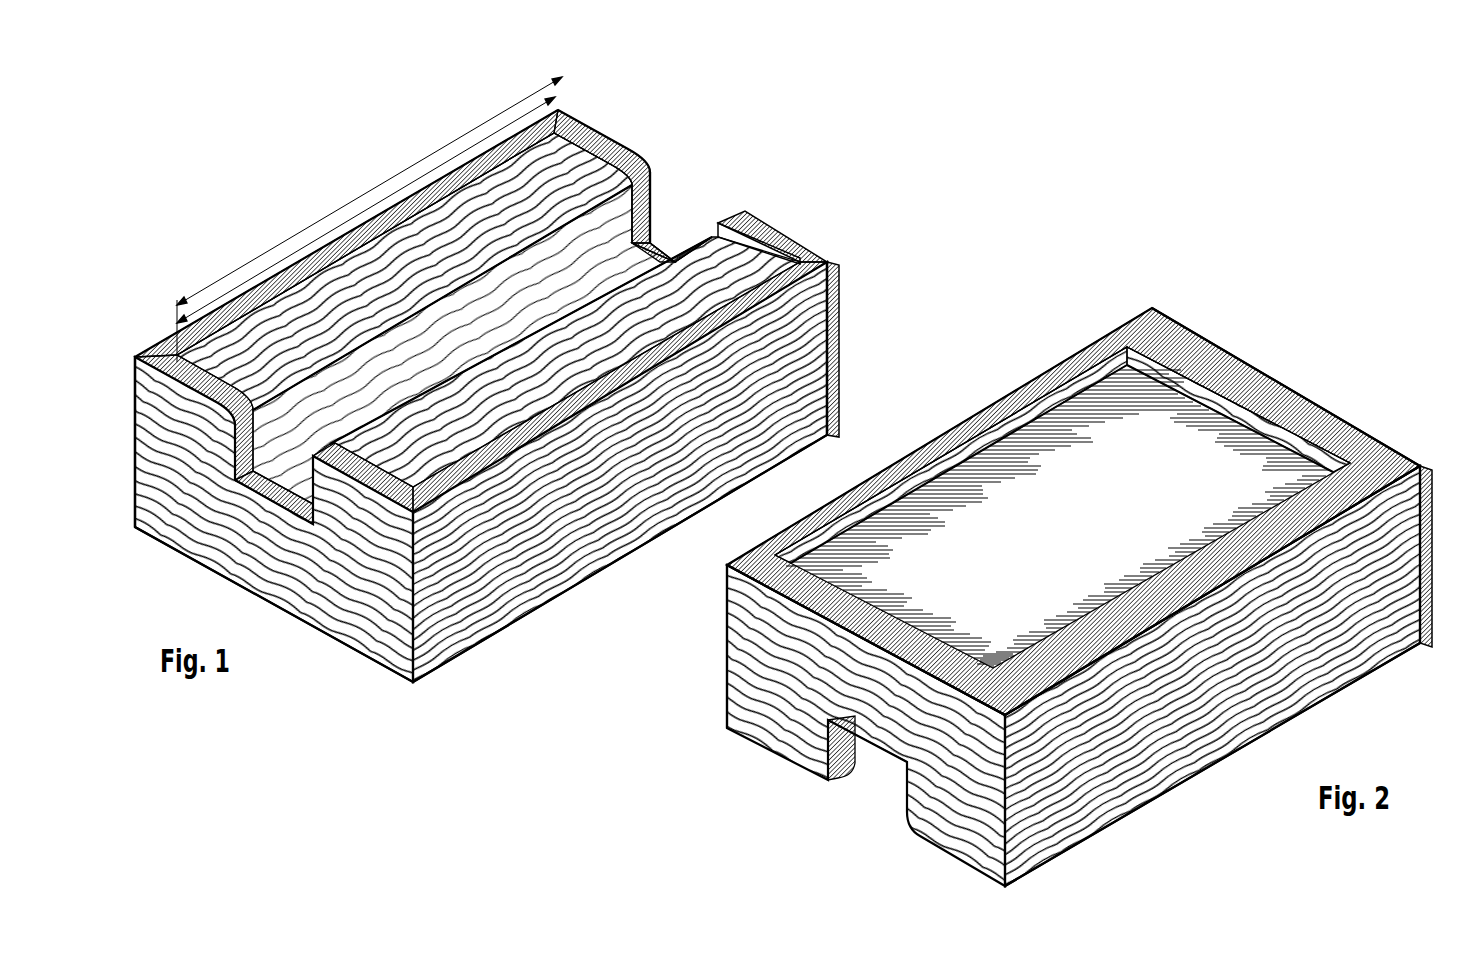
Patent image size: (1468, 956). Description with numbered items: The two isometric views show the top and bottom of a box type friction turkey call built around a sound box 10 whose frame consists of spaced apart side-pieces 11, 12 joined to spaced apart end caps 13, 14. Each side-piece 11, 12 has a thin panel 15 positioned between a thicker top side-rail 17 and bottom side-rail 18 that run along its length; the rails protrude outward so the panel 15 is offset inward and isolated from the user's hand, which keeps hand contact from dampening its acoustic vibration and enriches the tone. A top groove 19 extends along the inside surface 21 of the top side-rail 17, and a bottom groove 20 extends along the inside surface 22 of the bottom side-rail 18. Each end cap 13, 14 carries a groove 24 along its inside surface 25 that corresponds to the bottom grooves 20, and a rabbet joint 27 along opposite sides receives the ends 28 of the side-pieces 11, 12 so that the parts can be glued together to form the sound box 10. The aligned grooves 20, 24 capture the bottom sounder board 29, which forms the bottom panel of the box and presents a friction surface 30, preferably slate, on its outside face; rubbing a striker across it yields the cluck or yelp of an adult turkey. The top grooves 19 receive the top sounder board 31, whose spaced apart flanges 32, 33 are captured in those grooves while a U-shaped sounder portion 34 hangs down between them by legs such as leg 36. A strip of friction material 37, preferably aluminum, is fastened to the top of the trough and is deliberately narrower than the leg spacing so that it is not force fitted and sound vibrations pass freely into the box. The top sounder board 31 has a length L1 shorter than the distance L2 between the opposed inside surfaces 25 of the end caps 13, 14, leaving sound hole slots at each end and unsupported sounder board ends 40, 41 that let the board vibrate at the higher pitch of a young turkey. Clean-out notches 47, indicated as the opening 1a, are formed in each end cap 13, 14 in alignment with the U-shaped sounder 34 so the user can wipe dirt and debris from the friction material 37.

In FIG. 1, the sound box 10 is at (842, 292).
In FIG. 2, the sound box 10 is at (1183, 318).
In FIG. 1, the side-piece 11 is at (840, 333).
In FIG. 2, the side-piece 11 is at (1033, 388).
In FIG. 1, the side-piece 12 is at (172, 357).
In FIG. 2, the side-piece 12 is at (1217, 740).
In FIG. 1, the end cap 13 is at (363, 593).
In FIG. 2, the end cap 13 is at (953, 815).
In FIG. 1, the end cap 14 is at (612, 134).
In FIG. 2, the end cap 14 is at (1262, 382).
In FIG. 1, the panel 15 is at (507, 545).
In FIG. 2, the panel 15 is at (1100, 747).
In FIG. 1, the top side-rail 17 is at (300, 262).
In FIG. 2, the top side-rail 17 is at (1388, 635).
In FIG. 1, the bottom side-rail 18 is at (840, 418).
In FIG. 2, the bottom side-rail 18 is at (1387, 470).
In FIG. 1, the top groove 19 is at (250, 297).
In FIG. 2, the bottom groove 20 is at (1100, 385).
In FIG. 1, the inside surface of top side-rail 21 is at (335, 240).
In FIG. 2, the inside surface of bottom side-rail 22 is at (990, 438).
In FIG. 2, the groove 24 is at (1330, 430).
In FIG. 1, the inside surface of end cap 25 is at (360, 597).
In FIG. 2, the inside surface of end cap 25 is at (1340, 440).
In FIG. 1, the rabbet joint 27 is at (800, 258).
In FIG. 2, the rabbet joint 27 is at (727, 592).
In FIG. 1, the ends of side-pieces 28 is at (803, 240).
In FIG. 2, the ends of side-pieces 28 is at (767, 555).
In FIG. 2, the bottom sounder board 29 is at (1175, 383).
In FIG. 2, the friction surface 30 is at (1065, 531).
In FIG. 1, the top sounder board 31 is at (562, 182).
In FIG. 1, the flange 32 is at (493, 167).
In FIG. 1, the flange 33 is at (727, 245).
In FIG. 1, the U-shaped sounder portion 34 is at (437, 373).
In FIG. 1, the leg 36 is at (653, 247).
In FIG. 1, the friction material 37 is at (345, 455).
In FIG. 1, the unsupported sounder board end 40 is at (700, 226).
In FIG. 1, the unsupported sounder board end 41 is at (133, 358).
In FIG. 1, the clean-out notch 47 is at (270, 475).
In FIG. 2, the clean-out notch 47 is at (874, 758).
In FIG. 1, the notch opening 1a is at (677, 145).
In FIG. 2, the notch opening 1a is at (738, 773).
In FIG. 1, the length of top sounder board L1 is at (462, 140).
In FIG. 1, the distance between inside surfaces of end caps L2 is at (413, 163).